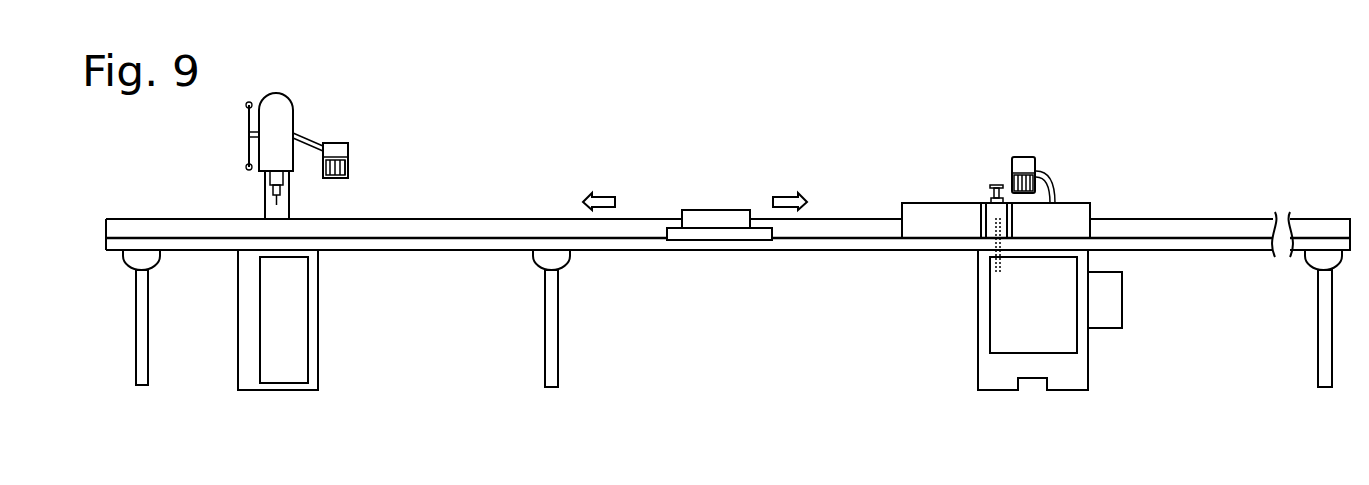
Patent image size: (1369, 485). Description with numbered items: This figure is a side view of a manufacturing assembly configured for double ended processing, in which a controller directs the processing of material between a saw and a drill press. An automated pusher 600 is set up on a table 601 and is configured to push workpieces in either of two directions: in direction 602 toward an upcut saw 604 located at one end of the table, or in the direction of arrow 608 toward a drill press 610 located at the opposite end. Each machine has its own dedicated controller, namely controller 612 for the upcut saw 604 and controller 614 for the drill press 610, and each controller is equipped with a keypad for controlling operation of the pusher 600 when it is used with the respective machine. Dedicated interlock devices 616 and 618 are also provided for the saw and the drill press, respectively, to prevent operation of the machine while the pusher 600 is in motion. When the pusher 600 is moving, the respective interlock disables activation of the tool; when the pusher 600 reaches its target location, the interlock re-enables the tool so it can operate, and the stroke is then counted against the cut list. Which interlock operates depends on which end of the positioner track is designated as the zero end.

The automated pusher 600 is at (707, 198).
The table 601 is at (464, 226).
The direction 602 is at (788, 196).
The upcut saw 604 is at (1077, 181).
The arrow 608 is at (606, 196).
The drill press 610 is at (310, 108).
The controller 612 is at (1010, 159).
The controller 614 is at (350, 148).
The interlock device 616 is at (1005, 295).
The interlock device 618 is at (295, 295).